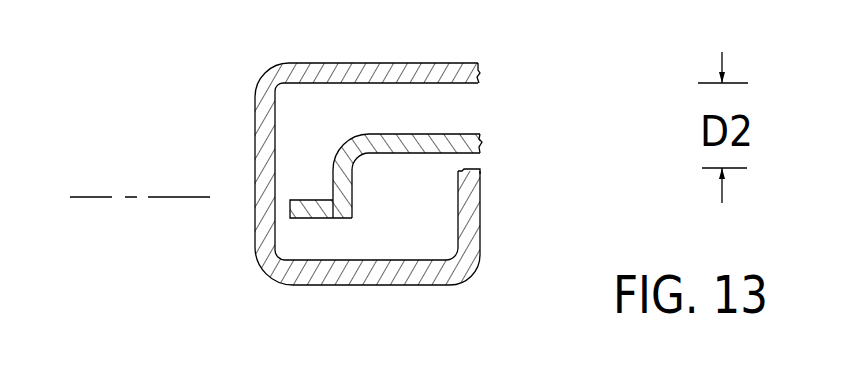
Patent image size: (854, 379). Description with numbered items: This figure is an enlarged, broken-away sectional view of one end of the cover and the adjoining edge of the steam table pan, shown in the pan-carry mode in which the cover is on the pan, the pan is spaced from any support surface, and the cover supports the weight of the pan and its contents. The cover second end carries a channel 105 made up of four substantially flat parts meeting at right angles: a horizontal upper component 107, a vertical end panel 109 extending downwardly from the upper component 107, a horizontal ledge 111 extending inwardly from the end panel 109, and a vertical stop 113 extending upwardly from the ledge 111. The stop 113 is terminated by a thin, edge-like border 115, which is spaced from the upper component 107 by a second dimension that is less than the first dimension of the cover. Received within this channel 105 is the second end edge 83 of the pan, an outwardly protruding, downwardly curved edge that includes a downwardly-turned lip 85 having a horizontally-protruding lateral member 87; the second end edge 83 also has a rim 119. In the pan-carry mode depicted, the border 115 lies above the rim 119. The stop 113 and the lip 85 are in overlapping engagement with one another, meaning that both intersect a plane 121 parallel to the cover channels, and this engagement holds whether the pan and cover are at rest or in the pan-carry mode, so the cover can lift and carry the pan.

The channel 105 is at (233, 68).
The horizontal upper component 107 is at (417, 63).
The vertical end panel 109 is at (253, 130).
The horizontal ledge 111 is at (382, 286).
The vertical stop 113 is at (480, 222).
The border 115 is at (470, 171).
The second end edge 83 is at (450, 132).
The downwardly-turned lip 85 is at (353, 190).
The horizontally-protruding lateral member 87 is at (290, 215).
The rim 119 is at (330, 217).
The plane 121 is at (90, 195).